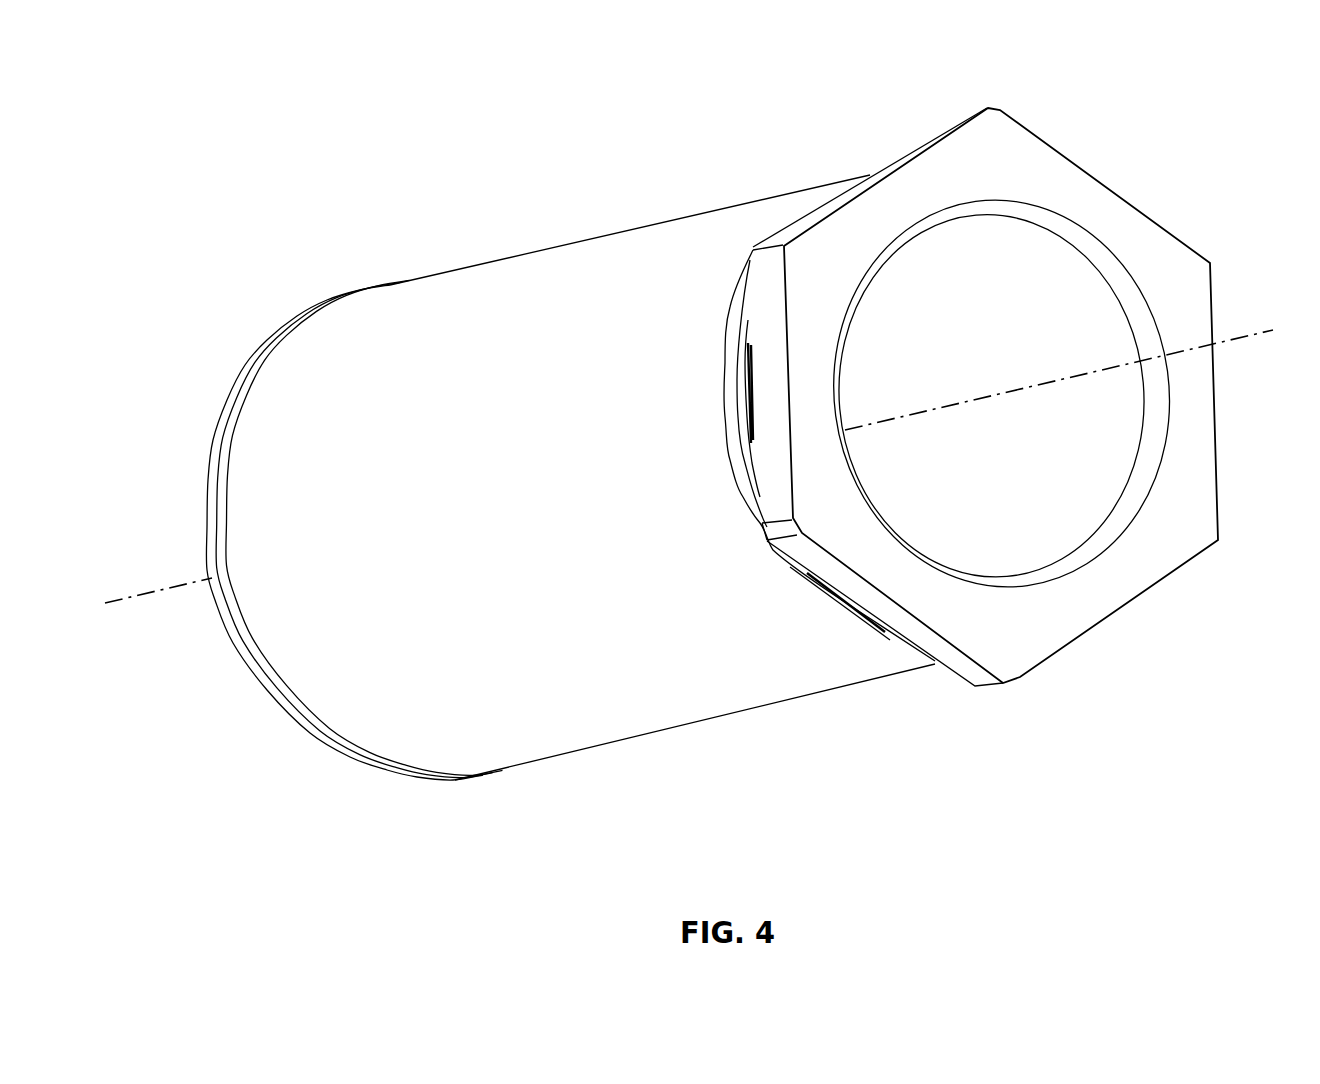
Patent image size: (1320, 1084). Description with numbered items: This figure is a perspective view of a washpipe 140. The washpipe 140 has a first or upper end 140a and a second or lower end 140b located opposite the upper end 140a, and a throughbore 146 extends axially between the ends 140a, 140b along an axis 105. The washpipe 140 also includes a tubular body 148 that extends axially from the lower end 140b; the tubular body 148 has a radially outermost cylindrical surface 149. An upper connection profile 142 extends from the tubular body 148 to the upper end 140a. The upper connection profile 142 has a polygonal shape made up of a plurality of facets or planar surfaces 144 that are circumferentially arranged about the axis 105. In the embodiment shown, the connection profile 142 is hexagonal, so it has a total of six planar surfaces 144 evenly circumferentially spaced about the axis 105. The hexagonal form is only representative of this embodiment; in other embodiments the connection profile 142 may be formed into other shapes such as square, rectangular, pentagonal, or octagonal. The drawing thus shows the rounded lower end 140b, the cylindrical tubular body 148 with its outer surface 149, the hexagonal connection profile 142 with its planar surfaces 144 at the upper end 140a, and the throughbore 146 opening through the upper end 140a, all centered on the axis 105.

The washpipe 140 is at (485, 93).
The first or upper end 140a is at (984, 418).
The second or lower end 140b is at (200, 516).
The upper connection profile 142 is at (1134, 197).
The planar surfaces 144 is at (912, 148).
The throughbore 146 is at (965, 543).
The tubular body 148 is at (539, 250).
The radially outermost cylindrical surface 149 is at (567, 685).
The axis 105 is at (1253, 333).